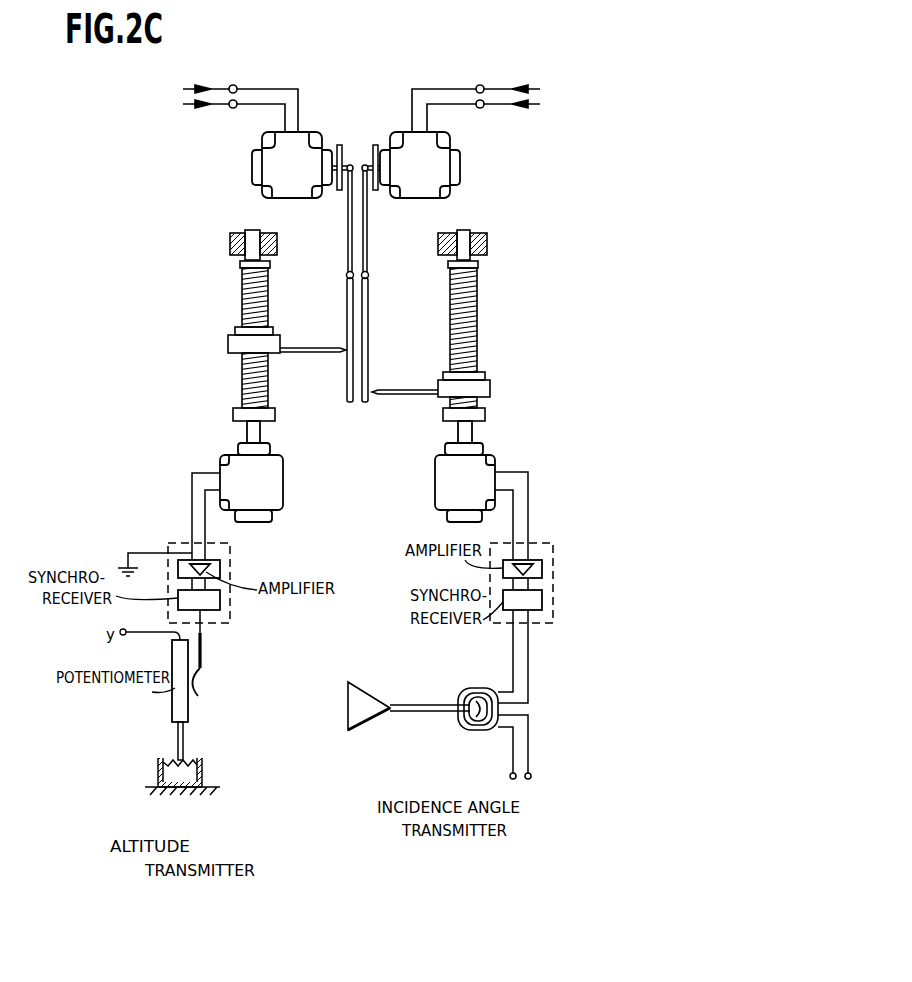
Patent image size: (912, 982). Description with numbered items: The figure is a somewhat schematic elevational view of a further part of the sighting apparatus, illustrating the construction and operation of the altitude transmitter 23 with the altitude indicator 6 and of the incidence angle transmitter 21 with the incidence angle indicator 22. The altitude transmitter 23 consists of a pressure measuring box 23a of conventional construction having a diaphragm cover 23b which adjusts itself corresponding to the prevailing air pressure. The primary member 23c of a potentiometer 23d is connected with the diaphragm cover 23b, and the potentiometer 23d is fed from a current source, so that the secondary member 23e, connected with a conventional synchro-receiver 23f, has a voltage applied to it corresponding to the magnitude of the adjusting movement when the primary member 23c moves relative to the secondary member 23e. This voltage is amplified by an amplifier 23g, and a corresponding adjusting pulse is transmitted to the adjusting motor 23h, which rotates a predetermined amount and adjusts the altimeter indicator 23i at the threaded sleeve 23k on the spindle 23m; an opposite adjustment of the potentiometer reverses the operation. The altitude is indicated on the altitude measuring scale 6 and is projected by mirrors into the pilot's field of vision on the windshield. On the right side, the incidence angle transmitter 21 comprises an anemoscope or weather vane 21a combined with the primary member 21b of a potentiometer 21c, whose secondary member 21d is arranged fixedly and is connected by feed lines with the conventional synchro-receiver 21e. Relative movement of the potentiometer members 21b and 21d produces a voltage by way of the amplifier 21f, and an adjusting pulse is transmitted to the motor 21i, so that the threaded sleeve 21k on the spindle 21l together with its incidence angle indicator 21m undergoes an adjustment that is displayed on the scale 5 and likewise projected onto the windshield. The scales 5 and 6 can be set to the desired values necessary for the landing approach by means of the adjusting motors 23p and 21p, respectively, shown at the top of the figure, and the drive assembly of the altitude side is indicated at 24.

The adjusting motor 23p is at (280, 170).
The adjusting motor 21p is at (430, 178).
The altitude indicator 6 is at (346, 320).
The incidence angle indicator 5 is at (369, 320).
The altitude drive assembly 24 is at (200, 286).
The incidence angle indicator 22 is at (536, 242).
The spindle 23m is at (242, 392).
The threaded sleeve 23k is at (228, 343).
The altimeter indicator 23i is at (315, 355).
The spindle 21l is at (463, 333).
The threaded sleeve 21k is at (478, 388).
The incidence angle indicator 21m is at (407, 388).
The adjusting motor 23h is at (268, 482).
The motor 21i is at (452, 488).
The amplifier 23g is at (210, 568).
The synchro-receiver 23f is at (222, 598).
The amplifier 21f is at (540, 572).
The synchro-receiver 21e is at (545, 600).
The primary member 23c is at (175, 703).
The secondary member 23e is at (208, 652).
The potentiometer 23d is at (209, 693).
The diaphragm cover 23b is at (170, 760).
The pressure measuring box 23a is at (175, 774).
The altitude transmitter 23 is at (177, 804).
The potentiometer 21c is at (539, 676).
The weather vane 21a is at (365, 728).
The incidence angle transmitter 21 is at (440, 736).
The secondary member 21d is at (478, 688).
The primary member 21b is at (478, 730).